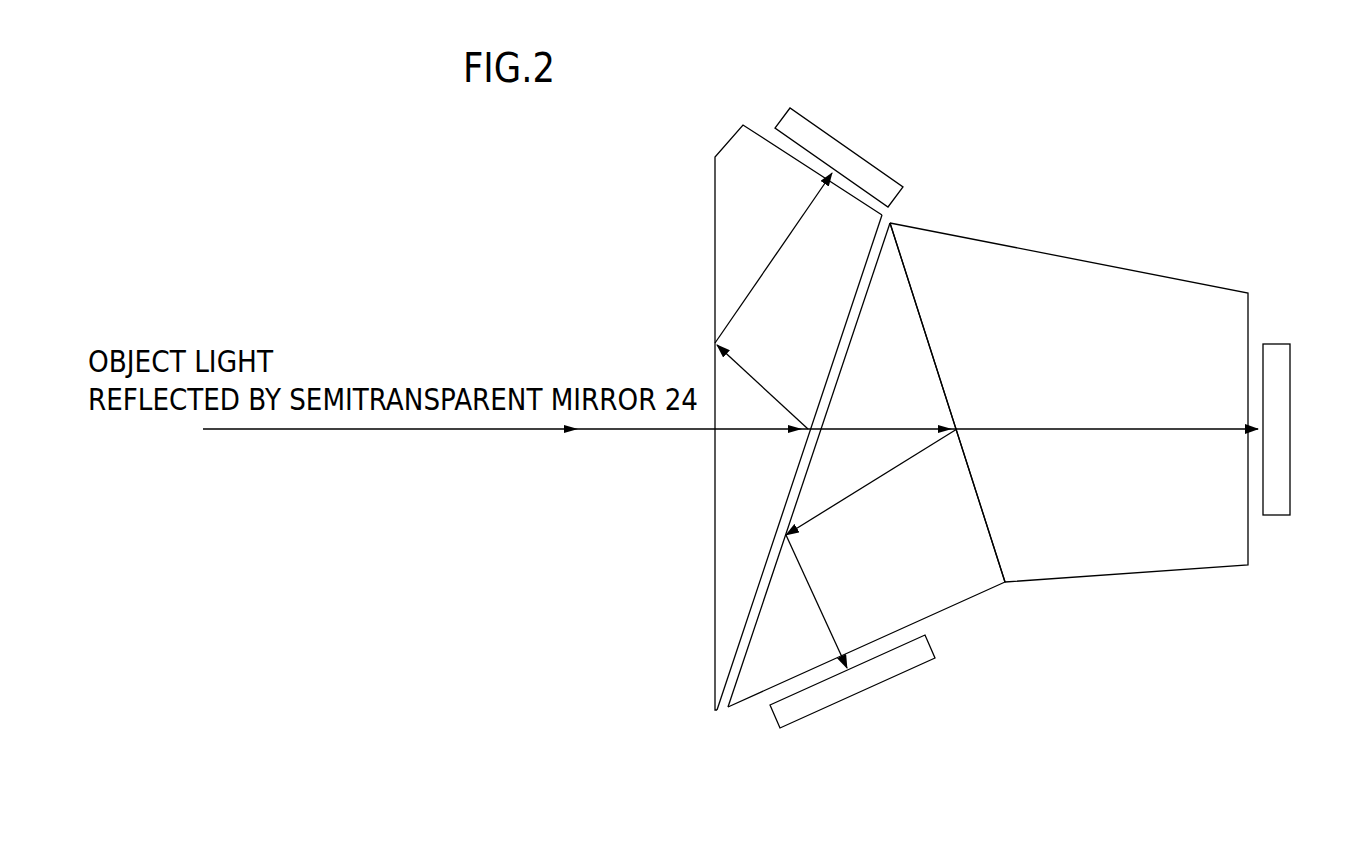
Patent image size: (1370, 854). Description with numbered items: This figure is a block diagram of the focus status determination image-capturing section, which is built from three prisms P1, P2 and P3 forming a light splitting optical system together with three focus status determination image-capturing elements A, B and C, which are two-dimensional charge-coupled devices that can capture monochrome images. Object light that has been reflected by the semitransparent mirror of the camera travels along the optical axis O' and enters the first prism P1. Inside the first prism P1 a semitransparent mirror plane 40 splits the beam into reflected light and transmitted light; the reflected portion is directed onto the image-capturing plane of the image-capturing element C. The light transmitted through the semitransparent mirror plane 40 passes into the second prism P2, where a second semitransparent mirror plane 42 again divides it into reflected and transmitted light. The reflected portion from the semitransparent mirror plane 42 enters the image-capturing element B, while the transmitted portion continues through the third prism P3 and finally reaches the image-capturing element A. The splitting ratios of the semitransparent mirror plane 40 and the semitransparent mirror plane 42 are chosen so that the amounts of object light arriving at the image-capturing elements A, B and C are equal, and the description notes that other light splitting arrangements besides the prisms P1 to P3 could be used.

The semitransparent mirror plane 40 is at (835, 348).
The semitransparent mirror plane 42 is at (940, 380).
The first prism P1 is at (753, 243).
The second prism P2 is at (933, 570).
The third prism P3 is at (1100, 318).
The image-capturing element A is at (1278, 423).
The image-capturing element B is at (878, 675).
The image-capturing element C is at (851, 158).
The optical axis O' is at (730, 474).